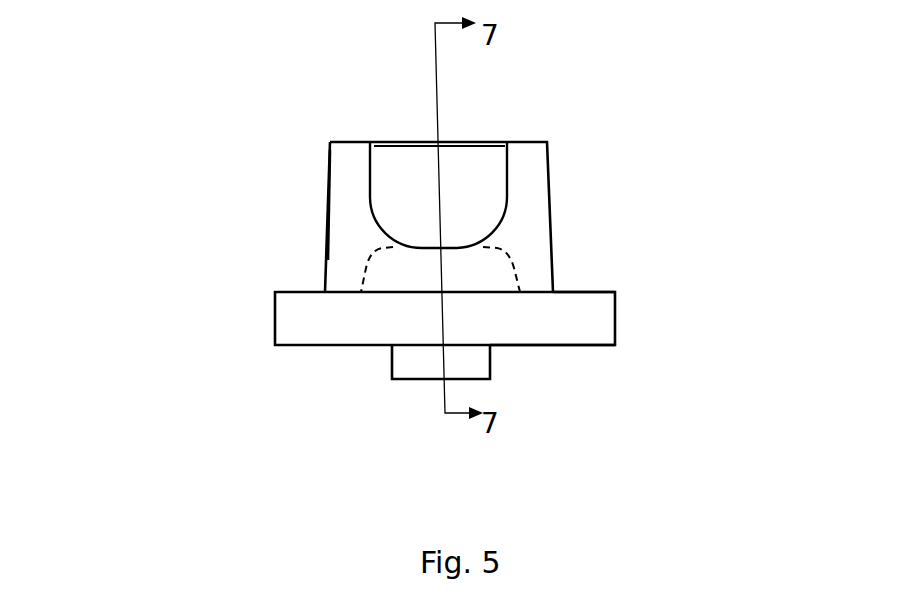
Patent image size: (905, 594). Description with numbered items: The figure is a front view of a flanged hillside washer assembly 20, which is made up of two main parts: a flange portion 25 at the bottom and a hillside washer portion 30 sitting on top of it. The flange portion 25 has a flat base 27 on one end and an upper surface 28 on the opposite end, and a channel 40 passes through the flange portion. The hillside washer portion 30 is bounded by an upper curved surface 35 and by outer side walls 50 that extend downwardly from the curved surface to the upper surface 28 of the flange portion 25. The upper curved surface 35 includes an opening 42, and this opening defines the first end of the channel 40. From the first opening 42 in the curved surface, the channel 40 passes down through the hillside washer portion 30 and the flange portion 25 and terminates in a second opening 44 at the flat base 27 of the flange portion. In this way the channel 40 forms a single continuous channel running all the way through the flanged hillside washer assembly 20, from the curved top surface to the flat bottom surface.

The flanged hillside washer assembly 20 is at (160, 92).
The flange portion 25 is at (560, 345).
The flat base 27 is at (517, 345).
The upper surface 28 is at (568, 292).
The hillside washer portion 30 is at (537, 200).
The upper curved surface 35 is at (527, 147).
The channel 40 is at (412, 218).
The opening 42 is at (387, 143).
The second opening 44 is at (437, 341).
The outer side walls 50 is at (342, 185).